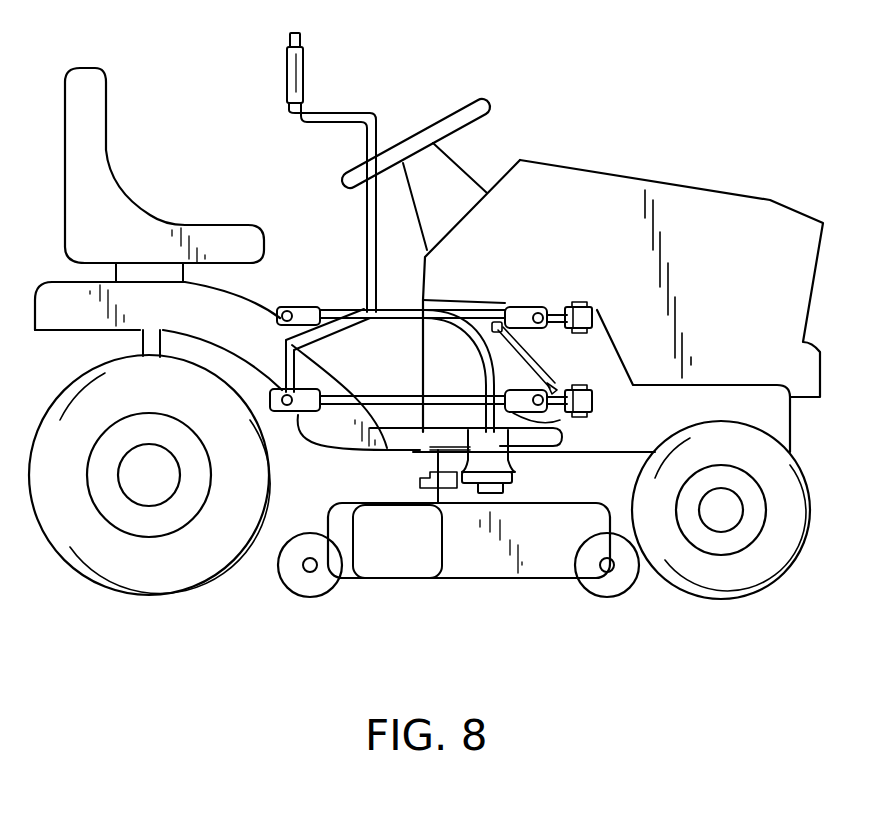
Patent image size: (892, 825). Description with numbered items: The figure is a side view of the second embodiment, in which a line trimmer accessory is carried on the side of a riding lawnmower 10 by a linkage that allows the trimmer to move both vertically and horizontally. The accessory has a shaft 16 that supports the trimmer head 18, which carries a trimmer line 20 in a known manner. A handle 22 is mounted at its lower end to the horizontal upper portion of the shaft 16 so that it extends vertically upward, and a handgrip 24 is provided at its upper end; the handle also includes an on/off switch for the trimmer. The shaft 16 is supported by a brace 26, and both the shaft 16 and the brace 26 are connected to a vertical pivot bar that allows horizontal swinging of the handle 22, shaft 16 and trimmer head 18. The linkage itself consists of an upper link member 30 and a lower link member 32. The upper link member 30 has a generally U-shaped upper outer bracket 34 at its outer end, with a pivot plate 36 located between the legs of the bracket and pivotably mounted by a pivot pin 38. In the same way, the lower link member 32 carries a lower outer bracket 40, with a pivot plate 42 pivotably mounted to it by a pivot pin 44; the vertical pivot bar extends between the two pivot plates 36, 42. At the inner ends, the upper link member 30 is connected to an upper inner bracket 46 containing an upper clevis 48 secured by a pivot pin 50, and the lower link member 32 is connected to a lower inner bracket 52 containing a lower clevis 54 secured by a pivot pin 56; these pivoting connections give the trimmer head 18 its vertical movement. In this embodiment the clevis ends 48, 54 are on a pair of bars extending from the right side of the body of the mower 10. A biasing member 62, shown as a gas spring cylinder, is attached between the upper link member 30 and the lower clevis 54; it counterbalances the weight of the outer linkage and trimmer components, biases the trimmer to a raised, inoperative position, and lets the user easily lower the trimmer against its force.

The lawnmower 10 is at (698, 86).
The shaft 16 is at (387, 447).
The trimmer head 18 is at (520, 467).
The trimmer line 20 is at (467, 483).
The handle 22 is at (367, 220).
The handgrip 24 is at (307, 70).
The brace 26 is at (333, 348).
The upper link member 30 is at (463, 303).
The lower link member 32 is at (385, 398).
The upper outer bracket 34 is at (331, 307).
The pivot plate 36 is at (280, 312).
The pivot pin 38 is at (290, 305).
The lower outer bracket 40 is at (298, 415).
The pivot plate 42 is at (276, 393).
The pivot pin 44 is at (278, 410).
The upper inner bracket 46 is at (505, 303).
The upper clevis 48 is at (557, 303).
The pivot pin 50 is at (541, 303).
The lower inner bracket 52 is at (515, 415).
The lower clevis 54 is at (583, 414).
The pivot pin 56 is at (560, 420).
The biasing member 62 is at (530, 352).